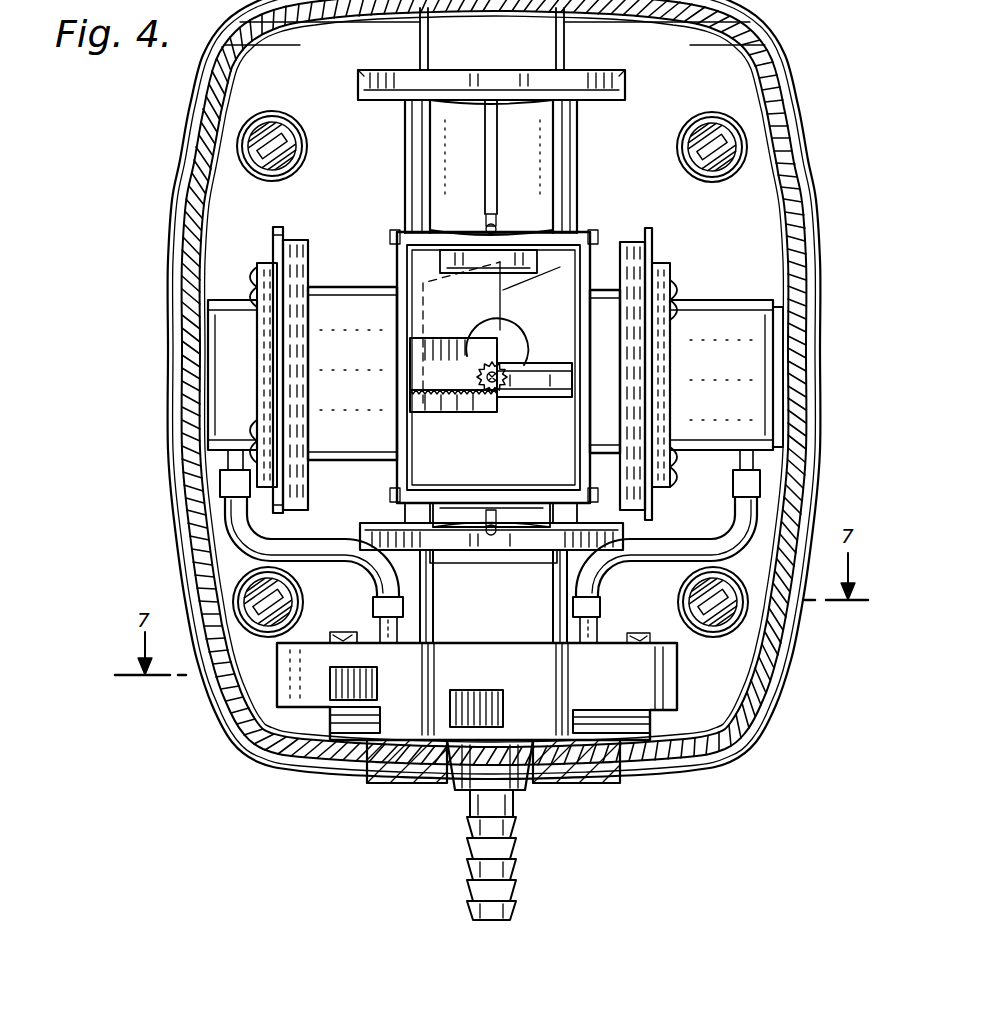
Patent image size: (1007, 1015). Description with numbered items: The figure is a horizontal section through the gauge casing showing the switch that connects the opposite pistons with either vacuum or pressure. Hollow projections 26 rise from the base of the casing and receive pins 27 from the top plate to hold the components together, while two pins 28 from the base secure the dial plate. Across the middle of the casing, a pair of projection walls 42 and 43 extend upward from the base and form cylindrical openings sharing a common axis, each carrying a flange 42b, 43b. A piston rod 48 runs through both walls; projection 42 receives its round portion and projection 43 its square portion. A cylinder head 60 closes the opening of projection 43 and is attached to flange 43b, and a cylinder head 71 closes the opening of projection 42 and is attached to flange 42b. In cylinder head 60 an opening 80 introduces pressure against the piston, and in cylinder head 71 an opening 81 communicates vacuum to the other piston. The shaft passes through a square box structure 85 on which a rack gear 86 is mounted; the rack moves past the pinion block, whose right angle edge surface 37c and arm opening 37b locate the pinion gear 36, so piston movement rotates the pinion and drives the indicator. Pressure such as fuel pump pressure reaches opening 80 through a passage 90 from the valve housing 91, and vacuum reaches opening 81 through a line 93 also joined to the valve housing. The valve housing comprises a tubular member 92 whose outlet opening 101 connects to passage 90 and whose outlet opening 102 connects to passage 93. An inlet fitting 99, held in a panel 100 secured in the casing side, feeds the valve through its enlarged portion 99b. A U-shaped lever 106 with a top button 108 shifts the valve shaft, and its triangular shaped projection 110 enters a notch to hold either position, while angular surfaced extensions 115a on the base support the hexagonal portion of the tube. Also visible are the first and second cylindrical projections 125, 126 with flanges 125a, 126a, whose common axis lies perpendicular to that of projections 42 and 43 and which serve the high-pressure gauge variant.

The hollow projections 26 is at (273, 112).
The pins 27 is at (288, 148).
The pins 28 is at (487, 225).
The pinion gear 36 is at (497, 387).
The arm opening 37b is at (423, 403).
The right angle edge surface 37c is at (635, 215).
The projection wall 42 is at (612, 312).
The flange 42b is at (652, 246).
The projection wall 43 is at (358, 292).
The flange 43b is at (295, 240).
The piston rod 48 is at (540, 385).
The cylinder head 60 is at (216, 302).
The cylinder head 71 is at (723, 305).
The opening 80 is at (222, 460).
The opening 81 is at (735, 474).
The square box structure 85 is at (428, 352).
The rack gear 86 is at (477, 402).
The passage 90 is at (360, 557).
The valve housing 91 is at (611, 622).
The tubular member 92 is at (373, 643).
The line 93 is at (737, 523).
The inlet fitting 99 is at (510, 820).
The enlarged portion 99b is at (420, 735).
The panel 100 is at (417, 773).
The outlet opening 101 is at (407, 627).
The outlet opening 102 is at (580, 647).
The U-shaped lever 106 is at (663, 694).
The top button 108 is at (503, 701).
The triangular shaped projection 110 is at (337, 694).
The angular surfaced extensions 115a is at (333, 642).
The first cylindrical projection 125 is at (530, 517).
The flange 125a is at (383, 520).
The second cylindrical projection 126 is at (533, 158).
The flange 126a is at (600, 72).